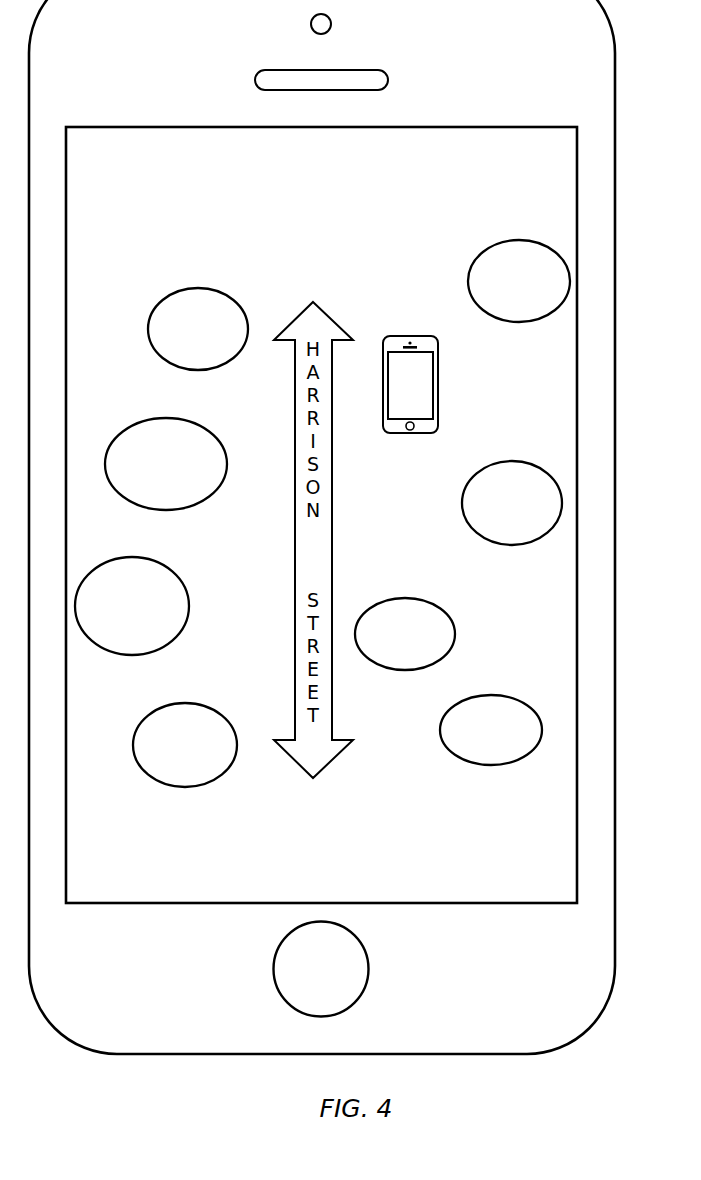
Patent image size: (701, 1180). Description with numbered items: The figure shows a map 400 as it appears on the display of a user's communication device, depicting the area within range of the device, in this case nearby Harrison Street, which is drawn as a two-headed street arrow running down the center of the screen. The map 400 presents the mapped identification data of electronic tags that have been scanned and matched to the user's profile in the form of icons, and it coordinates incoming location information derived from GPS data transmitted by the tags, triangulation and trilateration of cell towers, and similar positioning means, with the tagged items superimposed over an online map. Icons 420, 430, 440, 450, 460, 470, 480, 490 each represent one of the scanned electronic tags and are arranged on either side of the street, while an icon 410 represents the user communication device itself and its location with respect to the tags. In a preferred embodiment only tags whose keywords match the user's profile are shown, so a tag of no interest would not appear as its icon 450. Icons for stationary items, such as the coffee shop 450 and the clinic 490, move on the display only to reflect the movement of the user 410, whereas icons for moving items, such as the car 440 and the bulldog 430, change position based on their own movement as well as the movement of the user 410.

The map 400 is at (99, 186).
The icon representing the user communication device 410 is at (412, 335).
The icon 420 is at (501, 294).
The icon 430 is at (494, 516).
The icon 440 is at (387, 646).
The icon 450 is at (473, 744).
The icon 460 is at (180, 341).
The icon 470 is at (148, 477).
The icon 480 is at (114, 617).
The icon 490 is at (167, 756).